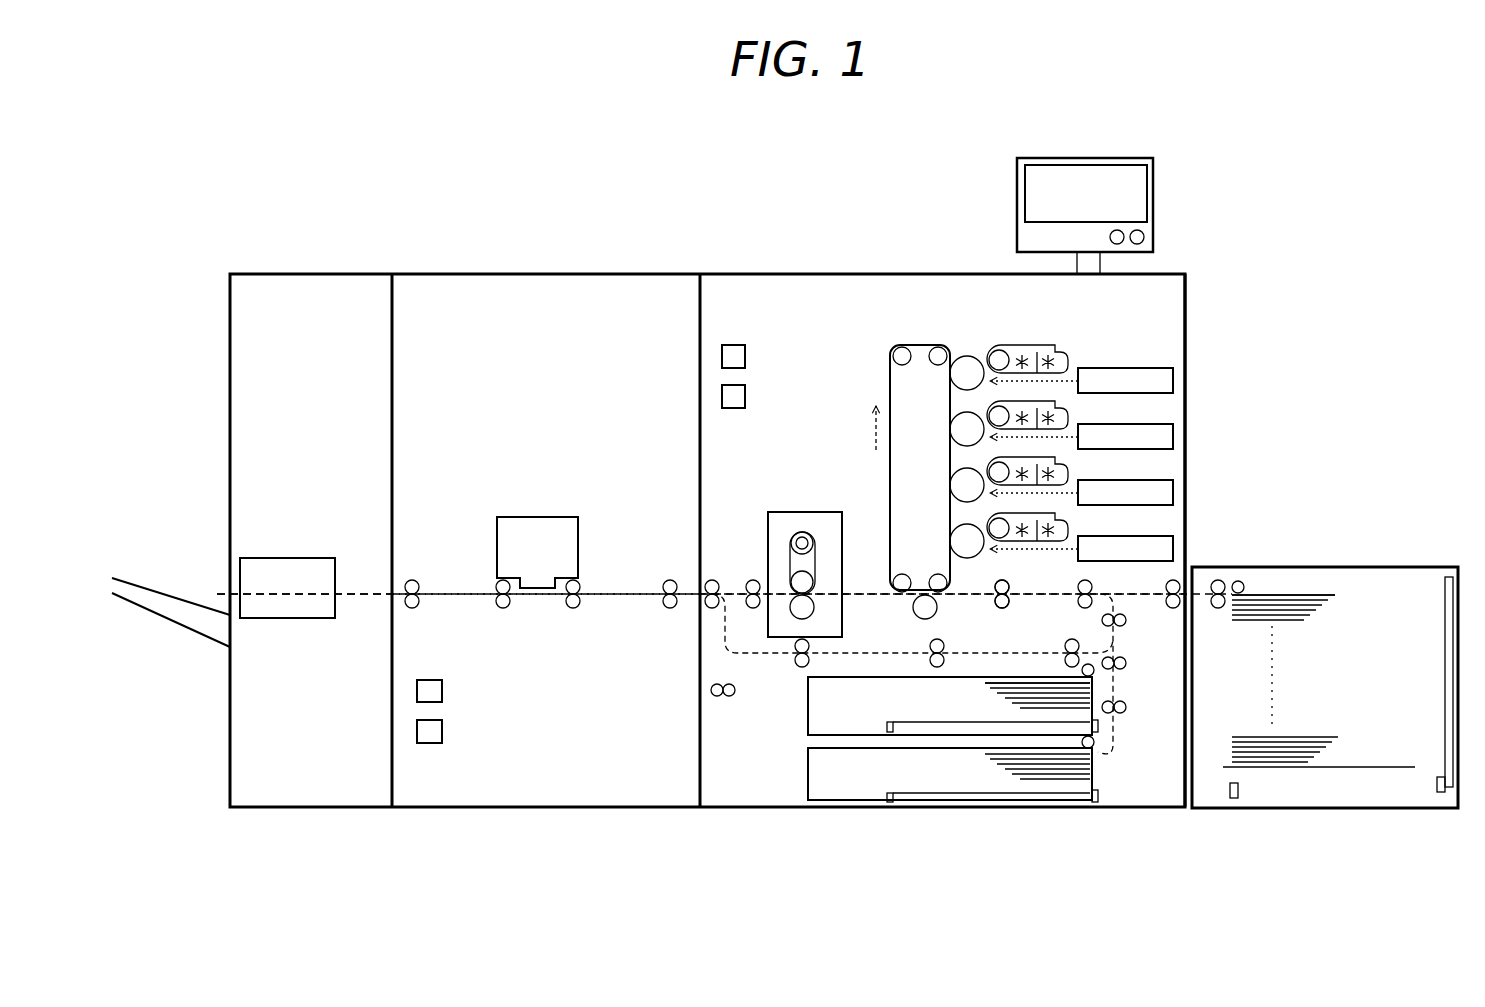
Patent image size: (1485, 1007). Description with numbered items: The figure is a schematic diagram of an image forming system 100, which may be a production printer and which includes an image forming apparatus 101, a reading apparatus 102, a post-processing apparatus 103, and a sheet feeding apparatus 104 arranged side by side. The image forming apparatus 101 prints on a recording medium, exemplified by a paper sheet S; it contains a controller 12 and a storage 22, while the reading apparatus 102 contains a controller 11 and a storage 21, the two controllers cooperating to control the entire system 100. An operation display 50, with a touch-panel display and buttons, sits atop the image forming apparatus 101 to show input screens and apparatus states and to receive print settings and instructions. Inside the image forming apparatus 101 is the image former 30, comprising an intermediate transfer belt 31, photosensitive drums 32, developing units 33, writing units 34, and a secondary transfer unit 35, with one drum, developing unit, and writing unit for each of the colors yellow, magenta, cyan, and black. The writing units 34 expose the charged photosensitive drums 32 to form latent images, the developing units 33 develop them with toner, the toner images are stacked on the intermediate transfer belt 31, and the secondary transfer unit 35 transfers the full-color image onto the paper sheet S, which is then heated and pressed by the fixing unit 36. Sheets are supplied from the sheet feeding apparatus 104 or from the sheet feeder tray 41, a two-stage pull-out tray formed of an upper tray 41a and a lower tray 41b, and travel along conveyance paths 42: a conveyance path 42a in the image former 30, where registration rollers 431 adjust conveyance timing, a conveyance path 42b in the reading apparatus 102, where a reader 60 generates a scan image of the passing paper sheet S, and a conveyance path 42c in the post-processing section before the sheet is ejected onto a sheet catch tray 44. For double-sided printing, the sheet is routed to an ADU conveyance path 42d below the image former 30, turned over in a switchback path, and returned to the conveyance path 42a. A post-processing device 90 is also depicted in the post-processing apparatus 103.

The image forming system 100 is at (286, 127).
The image forming apparatus 101 is at (844, 250).
The reading apparatus 102 is at (549, 250).
The post-processing apparatus 103 is at (326, 250).
The sheet feeding apparatus 104 is at (1318, 534).
The operation display 50 is at (1155, 202).
The controller 11 is at (442, 690).
The controller 12 is at (745, 357).
The storage 21 is at (442, 732).
The storage 22 is at (745, 397).
The image former 30 is at (871, 338).
The intermediate transfer belt 31 is at (918, 345).
The photosensitive drums 32 is at (958, 356).
The developing units 33 is at (1033, 345).
The writing units 34 is at (1092, 368).
The secondary transfer unit 35 is at (913, 613).
The fixing unit 36 is at (785, 512).
The sheet feeder tray 41 is at (735, 760).
The upper tray 41a is at (808, 714).
The lower tray 41b is at (808, 766).
The conveyance paths 42 is at (1140, 582).
The conveyance path 42a is at (1018, 592).
The conveyance path 42b is at (602, 592).
The conveyance path 42c is at (375, 604).
The ADU conveyance path 42d is at (757, 656).
The registration rollers 431 is at (1003, 610).
The sheet catch tray 44 is at (158, 578).
The reader 60 is at (552, 517).
The post-processing device 90 is at (300, 558).
The paper sheet S is at (1005, 690).